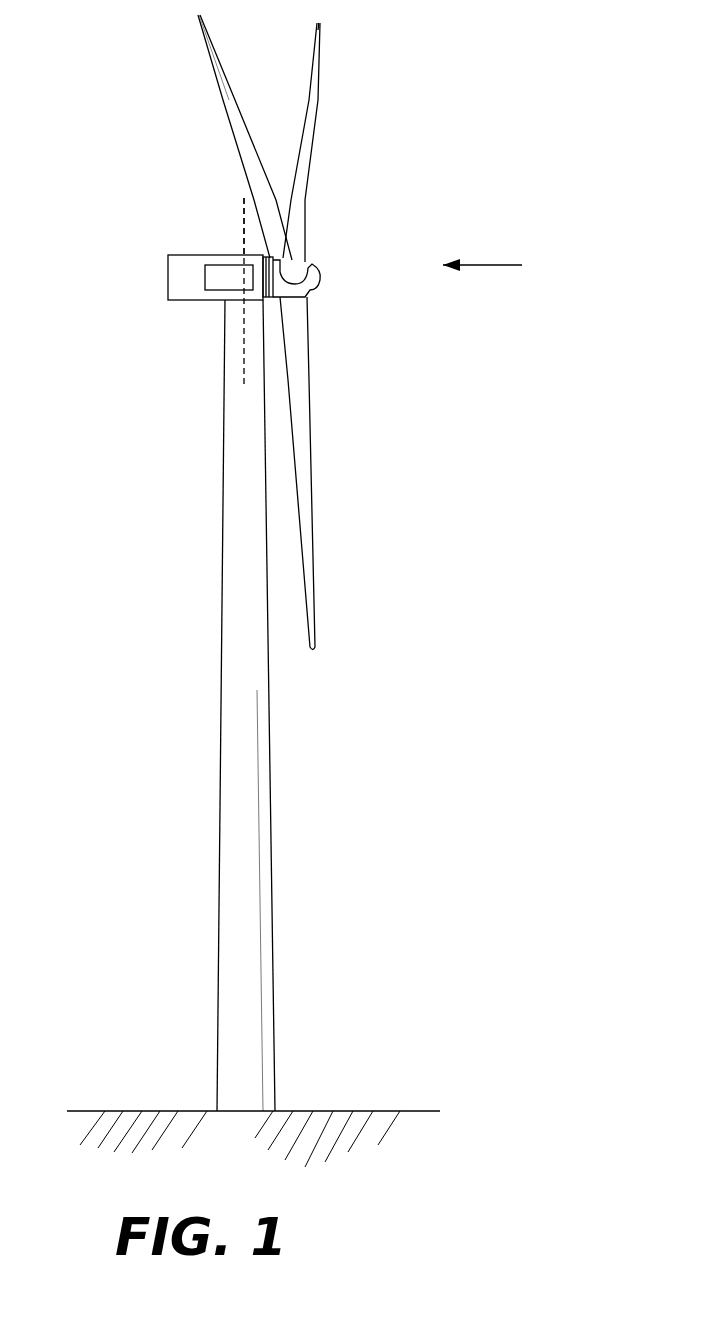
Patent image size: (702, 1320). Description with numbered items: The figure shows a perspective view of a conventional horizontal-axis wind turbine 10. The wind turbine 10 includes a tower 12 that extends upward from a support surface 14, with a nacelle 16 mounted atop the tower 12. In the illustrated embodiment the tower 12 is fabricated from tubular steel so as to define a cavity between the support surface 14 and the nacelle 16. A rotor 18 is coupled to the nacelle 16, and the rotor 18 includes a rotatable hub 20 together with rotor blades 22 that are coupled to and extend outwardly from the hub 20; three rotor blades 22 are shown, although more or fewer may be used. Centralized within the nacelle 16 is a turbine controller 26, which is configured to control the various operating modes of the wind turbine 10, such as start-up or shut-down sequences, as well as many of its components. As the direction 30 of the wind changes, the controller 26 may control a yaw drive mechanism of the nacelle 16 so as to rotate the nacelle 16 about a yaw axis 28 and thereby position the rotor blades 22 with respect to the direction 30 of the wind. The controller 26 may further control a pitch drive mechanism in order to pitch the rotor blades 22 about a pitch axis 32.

The wind turbine 10 is at (454, 60).
The tower 12 is at (226, 735).
The support surface 14 is at (148, 1111).
The nacelle 16 is at (202, 302).
The rotor 18 is at (326, 247).
The rotatable hub 20 is at (320, 287).
The rotor blade 22 is at (310, 63).
The turbine controller 26 is at (232, 260).
The yaw axis 28 is at (245, 363).
The direction of the wind 30 is at (493, 263).
The pitch axis 32 is at (250, 172).